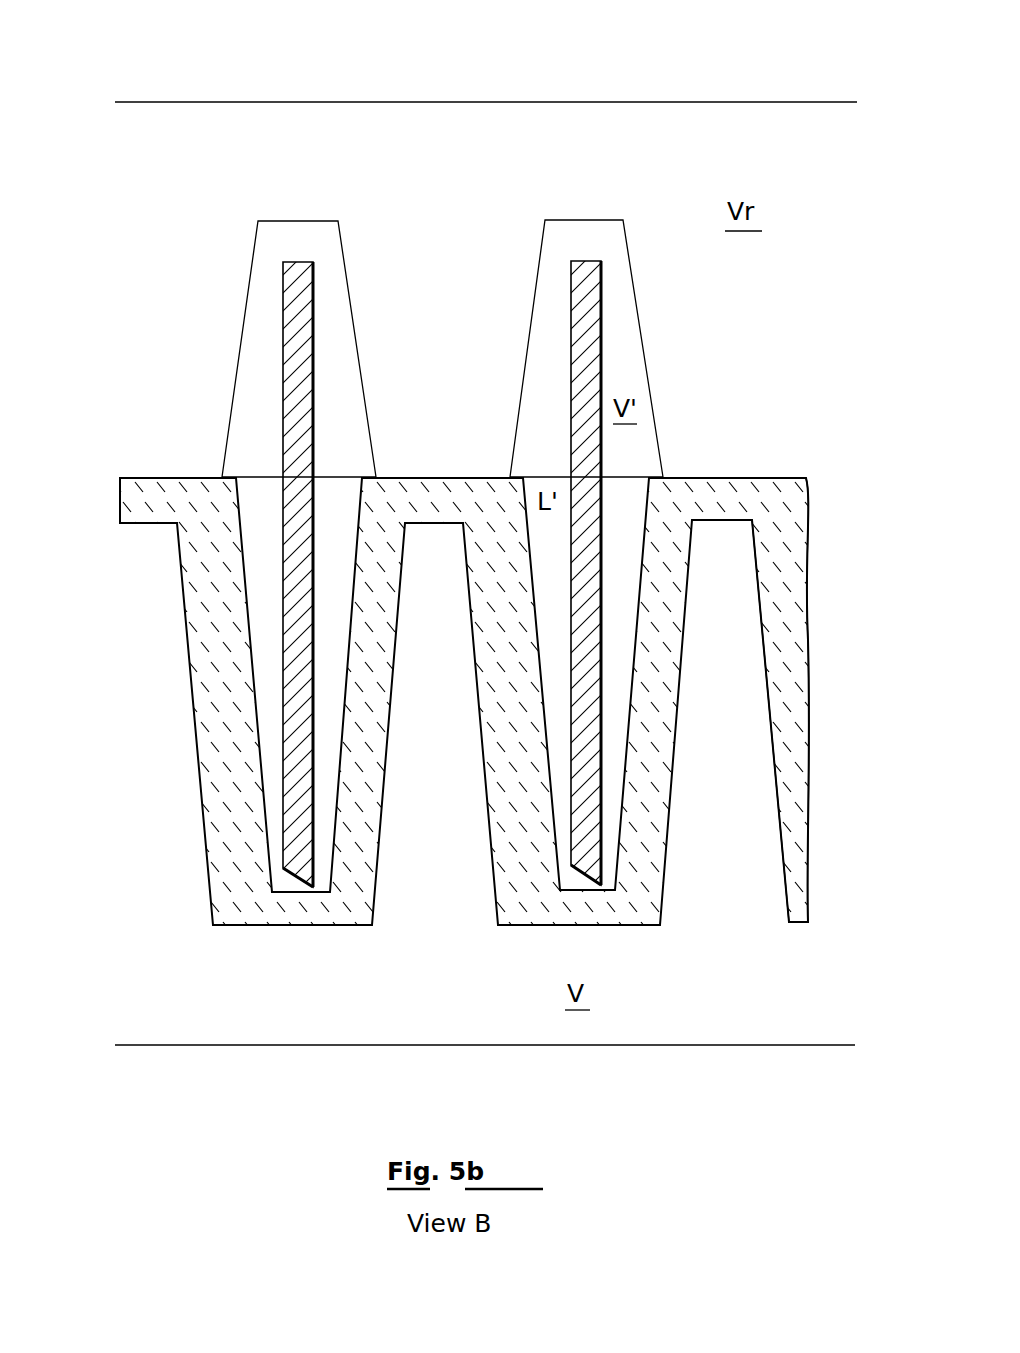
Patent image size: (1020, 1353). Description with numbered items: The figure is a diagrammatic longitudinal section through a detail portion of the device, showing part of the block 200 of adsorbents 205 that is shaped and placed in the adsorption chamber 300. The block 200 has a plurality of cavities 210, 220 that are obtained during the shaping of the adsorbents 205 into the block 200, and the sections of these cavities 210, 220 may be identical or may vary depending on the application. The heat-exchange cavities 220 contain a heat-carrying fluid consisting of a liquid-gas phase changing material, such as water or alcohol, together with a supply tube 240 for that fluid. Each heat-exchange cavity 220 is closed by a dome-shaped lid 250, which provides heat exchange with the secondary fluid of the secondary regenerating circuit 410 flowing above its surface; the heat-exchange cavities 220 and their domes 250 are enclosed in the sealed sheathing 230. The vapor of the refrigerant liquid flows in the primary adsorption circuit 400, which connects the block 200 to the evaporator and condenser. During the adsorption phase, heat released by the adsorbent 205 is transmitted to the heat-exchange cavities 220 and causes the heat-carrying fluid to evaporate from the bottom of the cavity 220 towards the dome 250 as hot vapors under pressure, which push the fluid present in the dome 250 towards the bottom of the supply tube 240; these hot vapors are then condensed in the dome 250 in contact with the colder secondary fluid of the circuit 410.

The block 200 is at (177, 715).
The adsorbents 205 is at (779, 672).
The cavities 210 is at (722, 895).
The heat-exchange cavities 220 is at (267, 592).
The sealed sheathing 230 is at (357, 530).
The supply tube 240 is at (310, 793).
The dome-shaped lid 250 is at (238, 352).
The adsorption chamber 300 is at (643, 1043).
The primary adsorption circuit 400 is at (290, 1028).
The secondary regenerating circuit 410 is at (568, 115).